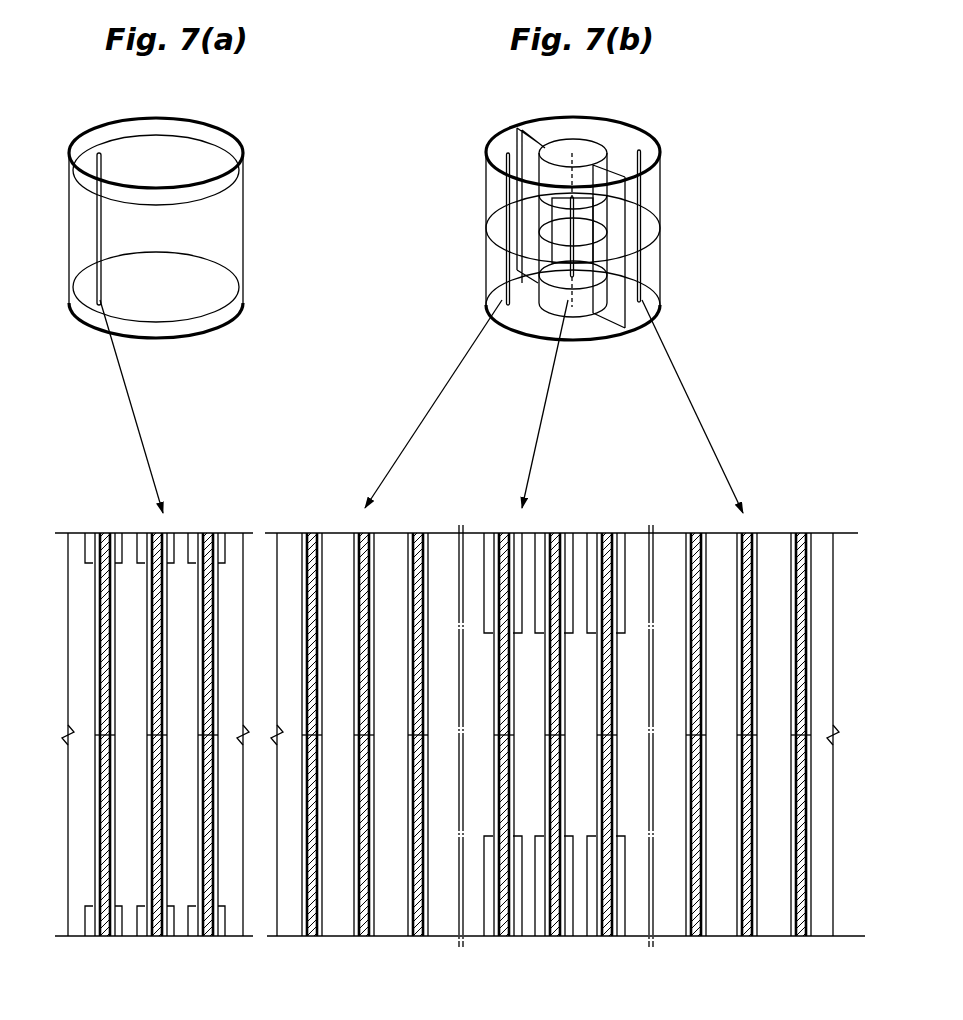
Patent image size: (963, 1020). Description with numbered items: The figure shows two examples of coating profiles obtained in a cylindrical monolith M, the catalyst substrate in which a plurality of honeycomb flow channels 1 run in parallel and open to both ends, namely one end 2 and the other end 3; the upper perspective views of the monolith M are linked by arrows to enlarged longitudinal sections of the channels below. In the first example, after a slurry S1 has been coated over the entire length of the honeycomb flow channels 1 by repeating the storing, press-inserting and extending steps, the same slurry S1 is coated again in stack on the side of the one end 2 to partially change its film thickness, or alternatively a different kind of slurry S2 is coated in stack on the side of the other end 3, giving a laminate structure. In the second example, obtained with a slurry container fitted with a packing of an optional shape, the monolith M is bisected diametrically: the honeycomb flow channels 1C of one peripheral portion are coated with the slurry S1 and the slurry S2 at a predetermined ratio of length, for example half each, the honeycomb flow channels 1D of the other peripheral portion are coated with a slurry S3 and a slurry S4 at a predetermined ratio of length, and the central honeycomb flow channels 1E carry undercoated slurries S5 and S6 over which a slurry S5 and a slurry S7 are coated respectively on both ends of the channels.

In FIG. 7A, the honeycomb flow channel 1 is at (99, 152).
In FIG. 7A, the one end 2 is at (198, 153).
In FIG. 7B, the one end 2 is at (495, 152).
In FIG. 7A, the other end 3 is at (201, 297).
In FIG. 7B, the other end 3 is at (528, 312).
In FIG. 7A, the monolith M is at (243, 222).
In FIG. 7B, the monolith M is at (660, 182).
In FIG. 7B, the honeycomb flow channels 1C is at (508, 153).
In FIG. 7B, the honeycomb flow channels 1D is at (640, 150).
In FIG. 7B, the honeycomb flow channels 1E is at (572, 153).
In FIG. 7A, the slurry S1 is at (192, 542).
In FIG. 7B, the slurry S1 is at (410, 582).
In FIG. 7A, the slurry S2 is at (192, 907).
In FIG. 7B, the slurry S2 is at (423, 917).
In FIG. 7B, the slurry S3 is at (790, 640).
In FIG. 7B, the slurry S4 is at (793, 853).
In FIG. 7B, the slurry S5 is at (463, 495).
In FIG. 7B, the slurry S6 is at (512, 800).
In FIG. 7B, the slurry S7 is at (518, 907).